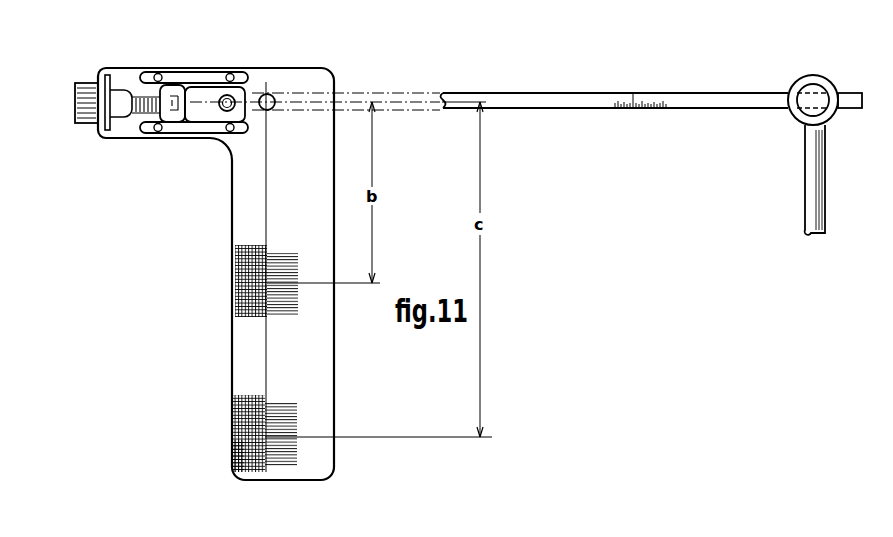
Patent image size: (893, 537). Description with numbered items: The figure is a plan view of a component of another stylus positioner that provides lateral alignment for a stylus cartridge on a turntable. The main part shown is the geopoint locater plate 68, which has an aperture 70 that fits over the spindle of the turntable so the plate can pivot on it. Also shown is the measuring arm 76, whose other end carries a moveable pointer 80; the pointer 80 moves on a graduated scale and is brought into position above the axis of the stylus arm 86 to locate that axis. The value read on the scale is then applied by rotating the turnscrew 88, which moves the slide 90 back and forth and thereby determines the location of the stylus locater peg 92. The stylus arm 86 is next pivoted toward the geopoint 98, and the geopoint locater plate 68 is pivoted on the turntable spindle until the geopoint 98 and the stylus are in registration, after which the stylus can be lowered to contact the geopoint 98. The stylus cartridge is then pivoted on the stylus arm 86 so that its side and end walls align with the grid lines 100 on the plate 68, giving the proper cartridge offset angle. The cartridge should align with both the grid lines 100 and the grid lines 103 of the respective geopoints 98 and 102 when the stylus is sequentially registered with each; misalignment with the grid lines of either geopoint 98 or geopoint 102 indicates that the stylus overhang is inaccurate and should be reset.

The geopoint locater plate 68 is at (362, 430).
The aperture 70 is at (271, 98).
The measuring arm 76 is at (588, 96).
The moveable pointer 80 is at (813, 88).
The stylus arm 86 is at (807, 183).
The turnscrew 88 is at (90, 115).
The slide 90 is at (203, 92).
The stylus locater peg 92 is at (233, 88).
The geopoint 98 is at (270, 283).
The grid lines 100 is at (243, 265).
The geopoint 102 is at (253, 435).
The grid lines 103 is at (232, 448).